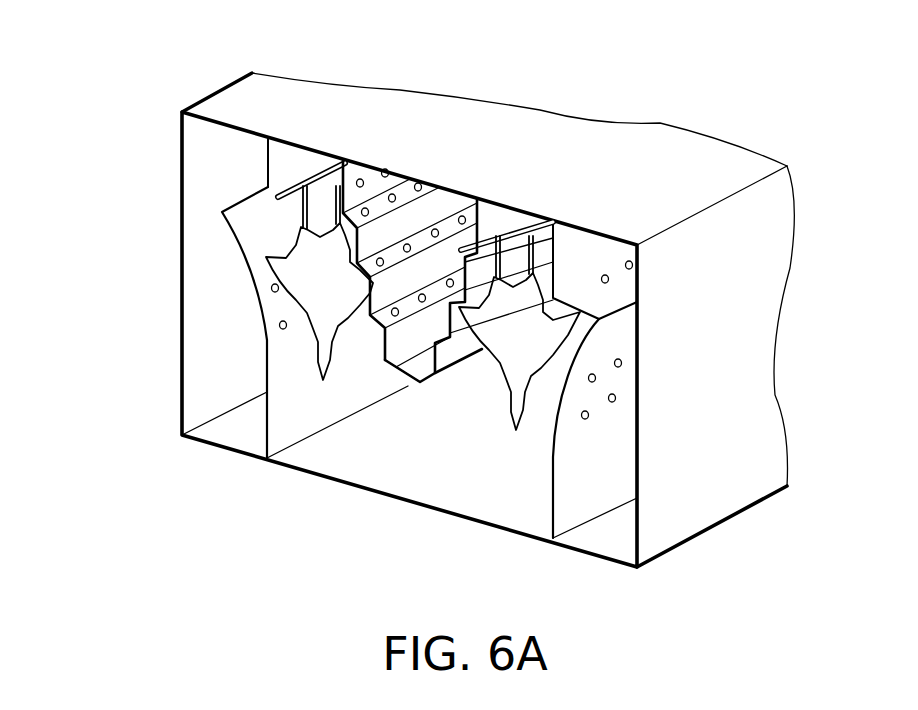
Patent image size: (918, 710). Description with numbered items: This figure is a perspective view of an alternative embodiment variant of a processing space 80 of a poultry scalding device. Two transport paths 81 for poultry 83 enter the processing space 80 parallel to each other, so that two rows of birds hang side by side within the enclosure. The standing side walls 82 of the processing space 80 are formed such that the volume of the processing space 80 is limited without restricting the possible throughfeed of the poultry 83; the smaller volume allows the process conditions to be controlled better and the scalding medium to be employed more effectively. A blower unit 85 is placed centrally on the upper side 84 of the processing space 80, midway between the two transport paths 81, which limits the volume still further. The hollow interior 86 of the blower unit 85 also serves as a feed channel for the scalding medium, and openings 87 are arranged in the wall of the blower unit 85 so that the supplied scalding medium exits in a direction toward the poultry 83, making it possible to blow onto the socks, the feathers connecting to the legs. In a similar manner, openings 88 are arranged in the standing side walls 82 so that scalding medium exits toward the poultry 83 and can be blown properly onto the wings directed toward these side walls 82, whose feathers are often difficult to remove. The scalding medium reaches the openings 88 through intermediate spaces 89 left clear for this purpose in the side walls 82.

The processing space 80 is at (131, 126).
The transport paths 81 is at (307, 183).
The standing side walls 82 is at (264, 348).
The poultry 83 is at (323, 320).
The upper side 84 is at (584, 180).
The blower unit 85 is at (421, 390).
The hollow interior 86 is at (403, 364).
The openings 87 is at (435, 230).
The openings 88 is at (279, 325).
The intermediate spaces 89 is at (222, 427).